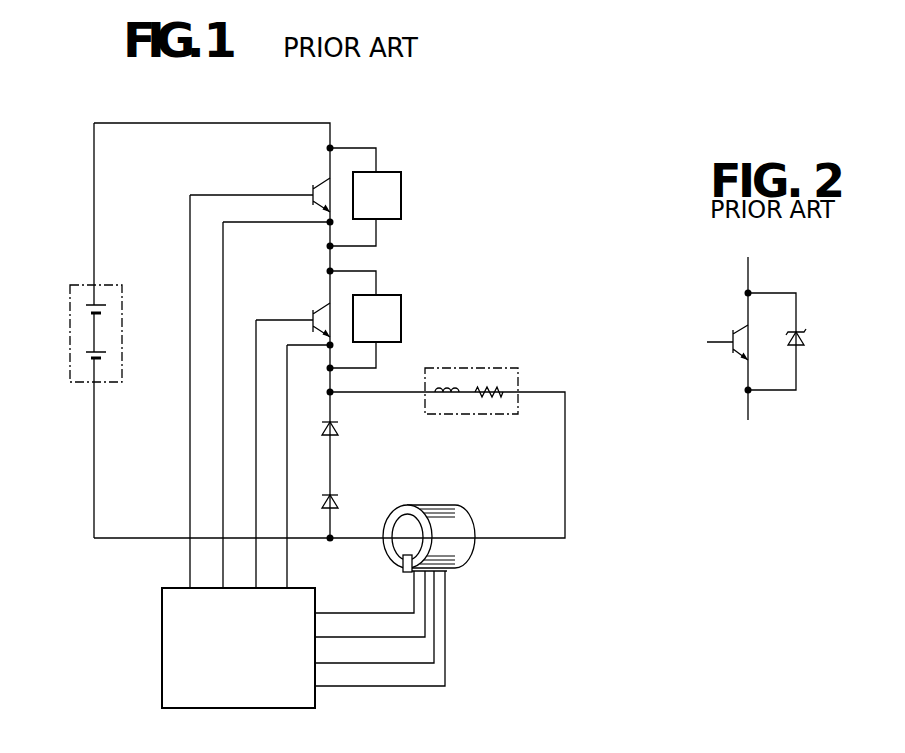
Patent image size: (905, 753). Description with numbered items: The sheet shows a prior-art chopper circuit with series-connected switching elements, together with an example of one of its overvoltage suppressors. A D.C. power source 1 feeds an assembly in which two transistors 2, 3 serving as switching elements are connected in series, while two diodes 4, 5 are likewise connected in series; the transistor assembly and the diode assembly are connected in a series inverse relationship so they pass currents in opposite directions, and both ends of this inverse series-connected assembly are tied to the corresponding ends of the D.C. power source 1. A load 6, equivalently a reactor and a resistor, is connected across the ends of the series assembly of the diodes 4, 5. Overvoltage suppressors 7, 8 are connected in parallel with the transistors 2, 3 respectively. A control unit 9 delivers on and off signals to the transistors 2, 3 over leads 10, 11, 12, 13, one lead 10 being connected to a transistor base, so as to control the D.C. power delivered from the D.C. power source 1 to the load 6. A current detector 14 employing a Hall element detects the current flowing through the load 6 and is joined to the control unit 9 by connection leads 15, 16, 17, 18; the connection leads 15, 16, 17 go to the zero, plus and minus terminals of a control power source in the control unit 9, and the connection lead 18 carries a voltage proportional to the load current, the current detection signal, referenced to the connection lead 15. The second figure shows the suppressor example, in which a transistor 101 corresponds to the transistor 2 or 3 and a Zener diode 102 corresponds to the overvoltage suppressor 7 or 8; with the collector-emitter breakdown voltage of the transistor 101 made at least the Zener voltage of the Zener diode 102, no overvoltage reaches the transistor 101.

In FIG. 1, the D.C. power source 1 is at (70, 304).
In FIG. 1, the transistor 2 is at (312, 189).
In FIG. 1, the transistor 3 is at (312, 315).
In FIG. 1, the diode 4 is at (340, 428).
In FIG. 1, the diode 5 is at (340, 500).
In FIG. 1, the load 6 is at (468, 368).
In FIG. 1, the overvoltage suppressor 7 is at (403, 187).
In FIG. 1, the overvoltage suppressor 8 is at (393, 294).
In FIG. 1, the control unit 9 is at (162, 660).
In FIG. 1, the lead 10 is at (190, 418).
In FIG. 1, the lead 11 is at (223, 462).
In FIG. 1, the lead 12 is at (256, 462).
In FIG. 1, the lead 13 is at (287, 462).
In FIG. 1, the current detector 14 is at (462, 562).
In FIG. 1, the connection lead 15 is at (338, 613).
In FIG. 1, the connection lead 16 is at (380, 637).
In FIG. 1, the connection lead 17 is at (388, 663).
In FIG. 1, the connection lead 18 is at (345, 686).
In FIG. 2, the transistor 101 is at (732, 335).
In FIG. 2, the Zener diode 102 is at (806, 340).